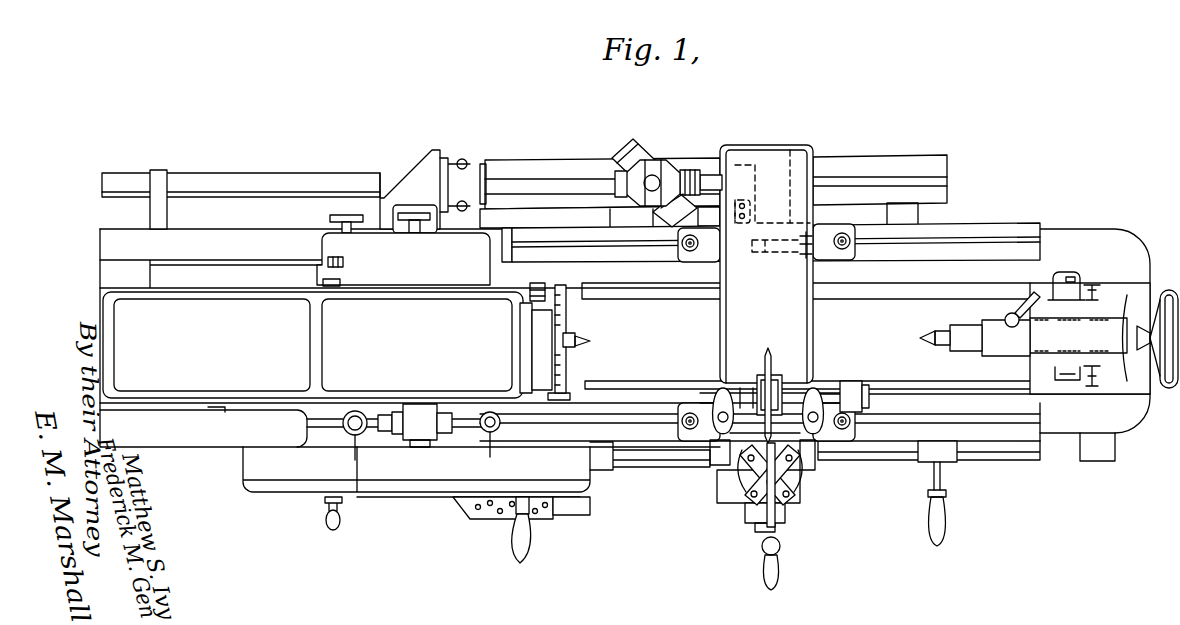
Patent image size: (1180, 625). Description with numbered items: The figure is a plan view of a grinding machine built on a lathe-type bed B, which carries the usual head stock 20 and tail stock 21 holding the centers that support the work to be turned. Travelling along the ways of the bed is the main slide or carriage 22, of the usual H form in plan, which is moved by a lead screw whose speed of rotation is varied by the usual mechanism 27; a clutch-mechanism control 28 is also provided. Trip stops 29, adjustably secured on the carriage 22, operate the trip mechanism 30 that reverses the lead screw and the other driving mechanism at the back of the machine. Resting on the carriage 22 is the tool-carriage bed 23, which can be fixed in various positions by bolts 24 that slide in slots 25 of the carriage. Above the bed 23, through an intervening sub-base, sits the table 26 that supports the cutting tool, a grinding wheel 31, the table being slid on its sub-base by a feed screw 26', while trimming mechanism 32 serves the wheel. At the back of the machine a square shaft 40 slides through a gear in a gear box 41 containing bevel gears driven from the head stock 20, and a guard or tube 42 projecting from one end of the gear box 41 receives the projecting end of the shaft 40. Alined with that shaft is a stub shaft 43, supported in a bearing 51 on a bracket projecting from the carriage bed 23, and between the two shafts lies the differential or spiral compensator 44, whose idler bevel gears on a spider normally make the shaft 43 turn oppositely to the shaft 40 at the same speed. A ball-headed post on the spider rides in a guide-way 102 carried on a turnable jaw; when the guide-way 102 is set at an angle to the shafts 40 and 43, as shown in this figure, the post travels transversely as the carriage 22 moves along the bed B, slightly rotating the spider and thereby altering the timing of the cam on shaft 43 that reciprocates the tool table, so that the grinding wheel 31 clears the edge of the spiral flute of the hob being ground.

The bed B is at (1118, 221).
The head stock 20 is at (529, 296).
The tail stock 21 is at (1049, 333).
The main slide or carriage 22 is at (974, 222).
The tool-carriage bed 23 is at (832, 253).
The bolts 24 is at (688, 251).
The slots 25 is at (1040, 238).
The table 26 is at (766, 264).
The feed screw 26' is at (793, 516).
The speed-varying mechanism 27 is at (534, 556).
The clutch-mechanism control 28 is at (947, 521).
The trip stops 29 is at (355, 410).
The trip mechanism 30 is at (385, 418).
The grinding wheel 31 is at (779, 371).
The trimming mechanism 32 is at (741, 488).
The square shaft 40 is at (561, 178).
The gear box 41 is at (437, 152).
The guard or tube 42 is at (273, 176).
The stub shaft 43 is at (689, 168).
The spiral compensator 44 is at (667, 151).
The bearing 51 is at (721, 166).
The guide-way 102 is at (619, 155).